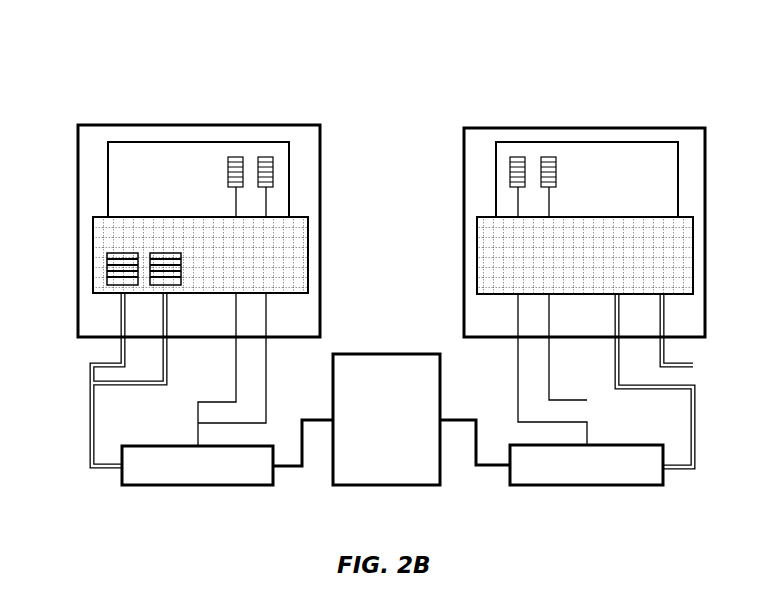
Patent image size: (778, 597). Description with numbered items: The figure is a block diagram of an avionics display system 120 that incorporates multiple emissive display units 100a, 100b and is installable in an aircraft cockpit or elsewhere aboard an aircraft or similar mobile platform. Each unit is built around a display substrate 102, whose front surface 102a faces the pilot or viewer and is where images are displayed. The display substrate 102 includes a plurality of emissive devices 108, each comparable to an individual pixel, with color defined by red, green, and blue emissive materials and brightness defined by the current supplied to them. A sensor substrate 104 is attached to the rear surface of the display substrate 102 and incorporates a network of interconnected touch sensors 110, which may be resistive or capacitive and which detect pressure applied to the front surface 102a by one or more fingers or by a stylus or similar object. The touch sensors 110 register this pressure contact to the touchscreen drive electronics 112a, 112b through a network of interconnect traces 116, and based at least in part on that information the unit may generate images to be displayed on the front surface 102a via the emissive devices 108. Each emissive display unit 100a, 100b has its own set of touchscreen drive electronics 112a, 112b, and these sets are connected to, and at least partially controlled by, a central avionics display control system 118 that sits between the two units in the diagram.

The avionics display system 120 is at (77, 56).
The emissive display unit 100a is at (355, 276).
The emissive display unit 100b is at (477, 127).
The display substrate 102 is at (130, 188).
The front surface 102a is at (130, 142).
The sensor substrate 104 is at (278, 270).
The emissive devices 108 is at (273, 172).
The touch sensors 110 is at (183, 270).
The touchscreen drive electronics 112a is at (198, 487).
The touchscreen drive electronics 112b is at (587, 485).
The interconnect traces 116 is at (110, 385).
The central avionics display control system 118 is at (386, 419).